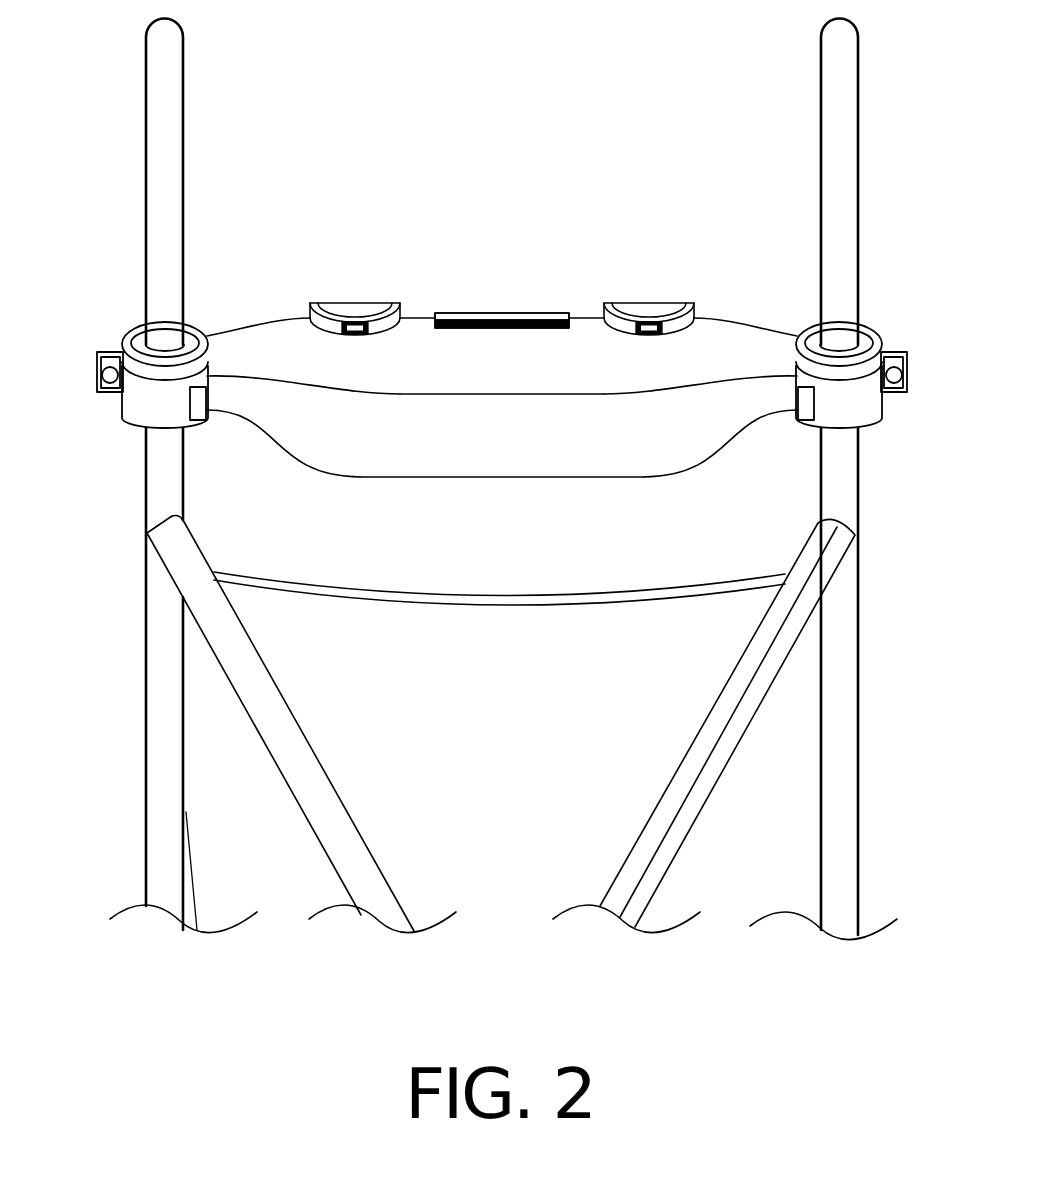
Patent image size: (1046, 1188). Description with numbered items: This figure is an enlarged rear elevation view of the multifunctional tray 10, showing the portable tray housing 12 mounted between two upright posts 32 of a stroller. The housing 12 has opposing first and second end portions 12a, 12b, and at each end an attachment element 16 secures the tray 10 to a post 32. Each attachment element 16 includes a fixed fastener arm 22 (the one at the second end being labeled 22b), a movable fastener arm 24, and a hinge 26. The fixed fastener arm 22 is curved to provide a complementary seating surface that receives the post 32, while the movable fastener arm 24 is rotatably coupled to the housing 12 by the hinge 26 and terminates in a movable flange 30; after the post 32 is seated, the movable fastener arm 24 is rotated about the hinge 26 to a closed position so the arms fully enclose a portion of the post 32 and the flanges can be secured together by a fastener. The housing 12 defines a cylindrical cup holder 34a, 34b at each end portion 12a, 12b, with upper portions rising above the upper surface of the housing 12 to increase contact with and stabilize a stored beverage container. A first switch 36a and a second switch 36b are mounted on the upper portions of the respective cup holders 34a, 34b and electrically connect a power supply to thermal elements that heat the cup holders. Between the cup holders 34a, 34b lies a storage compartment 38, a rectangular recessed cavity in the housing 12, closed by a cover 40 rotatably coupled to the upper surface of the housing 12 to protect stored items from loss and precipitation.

The multifunctional tray 10 is at (545, 198).
The portable tray housing 12 is at (420, 342).
The first end portion 12a is at (769, 414).
The second end portion 12b is at (294, 414).
The attachment element 16 is at (105, 318).
The fixed fastener arm 22 is at (799, 323).
The second clamp collar 22b is at (205, 323).
The movable fastener arm 24 is at (852, 403).
The hinge 26 is at (818, 405).
The movable flange 30 is at (897, 389).
The post 32 is at (168, 170).
The cup holder 34a is at (652, 303).
The cup holder 34b is at (343, 301).
The first switch 36a is at (648, 334).
The second switch 36b is at (352, 334).
The storage compartment 38 is at (496, 288).
The cover 40 is at (548, 318).